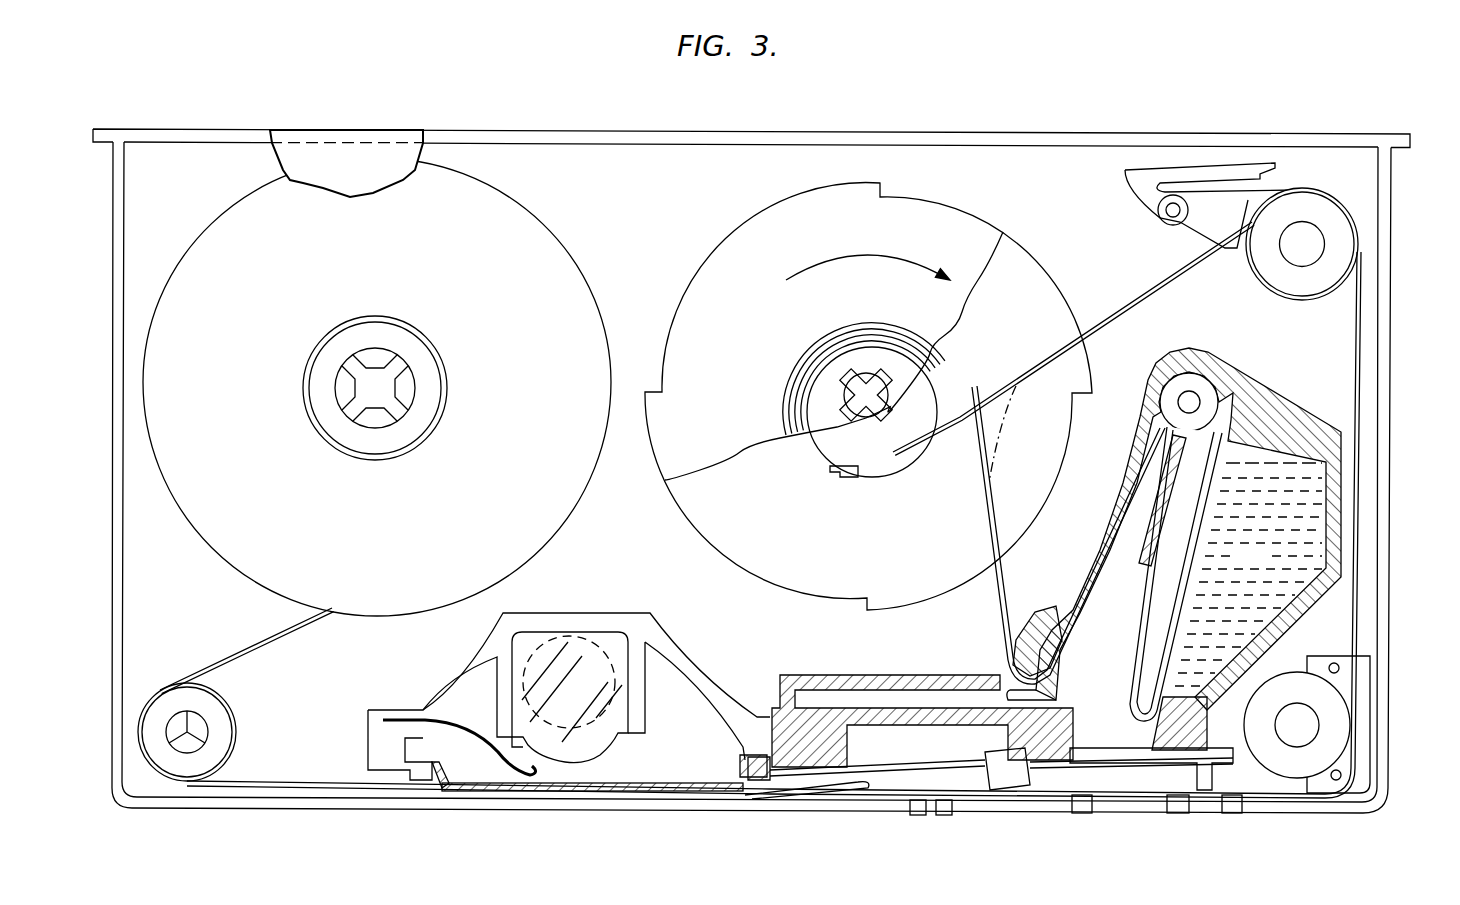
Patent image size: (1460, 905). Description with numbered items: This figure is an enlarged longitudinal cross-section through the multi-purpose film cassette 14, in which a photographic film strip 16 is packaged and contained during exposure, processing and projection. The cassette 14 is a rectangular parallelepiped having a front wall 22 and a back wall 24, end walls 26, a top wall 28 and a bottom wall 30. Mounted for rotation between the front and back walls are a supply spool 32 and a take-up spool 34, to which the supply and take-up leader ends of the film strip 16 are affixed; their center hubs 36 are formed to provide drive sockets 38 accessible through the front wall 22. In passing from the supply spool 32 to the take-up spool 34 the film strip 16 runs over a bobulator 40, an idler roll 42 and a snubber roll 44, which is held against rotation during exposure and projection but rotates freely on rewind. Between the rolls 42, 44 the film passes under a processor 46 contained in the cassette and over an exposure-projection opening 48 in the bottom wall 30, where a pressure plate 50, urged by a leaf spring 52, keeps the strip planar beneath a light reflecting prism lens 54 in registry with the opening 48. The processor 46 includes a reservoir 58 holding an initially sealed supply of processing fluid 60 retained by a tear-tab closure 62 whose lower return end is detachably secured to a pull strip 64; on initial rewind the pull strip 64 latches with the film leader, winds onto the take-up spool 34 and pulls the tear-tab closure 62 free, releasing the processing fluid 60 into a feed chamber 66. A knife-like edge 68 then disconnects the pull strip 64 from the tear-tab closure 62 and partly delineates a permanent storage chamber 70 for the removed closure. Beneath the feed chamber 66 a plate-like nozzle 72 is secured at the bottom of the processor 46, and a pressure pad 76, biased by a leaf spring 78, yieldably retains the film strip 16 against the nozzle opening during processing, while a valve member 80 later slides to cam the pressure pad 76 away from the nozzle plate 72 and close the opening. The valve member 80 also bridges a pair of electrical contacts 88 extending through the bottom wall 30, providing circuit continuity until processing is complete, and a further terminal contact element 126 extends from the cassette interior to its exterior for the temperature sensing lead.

The multi-purpose film cassette 14 is at (758, 456).
The photographic film strip 16 is at (272, 645).
The front wall 22 is at (363, 170).
The back wall 24 is at (650, 215).
The end walls 26 is at (112, 412).
The top wall 28 is at (950, 131).
The bottom wall 30 is at (392, 805).
The supply spool 32 is at (988, 220).
The take-up spool 34 is at (588, 292).
The center hubs 36 is at (412, 385).
The drive sockets 38 is at (378, 402).
The bobulator 40 is at (1326, 215).
The idler roll 42 is at (1342, 738).
The snubber roll 44 is at (180, 762).
The processor 46 is at (1258, 375).
The exposure-projection opening 48 is at (738, 802).
The pressure plate 50 is at (665, 790).
The leaf spring 52 is at (458, 742).
The light reflecting prism lens 54 is at (582, 699).
The reservoir 58 is at (1278, 466).
The processing fluid 60 is at (1265, 566).
The tear-tab closure 62 is at (1183, 613).
The pull strip 64 is at (1165, 545).
The feed chamber 66 is at (1124, 692).
The knife-like edge 68 is at (1008, 690).
The permanent storage chamber 70 is at (935, 700).
The nozzle plate 72 is at (1190, 762).
The pressure pad 76 is at (1128, 800).
The leaf spring 78 is at (1185, 813).
The valve member 80 is at (888, 792).
The electrical contacts 88 is at (945, 815).
The terminal contact element 126 is at (1238, 813).